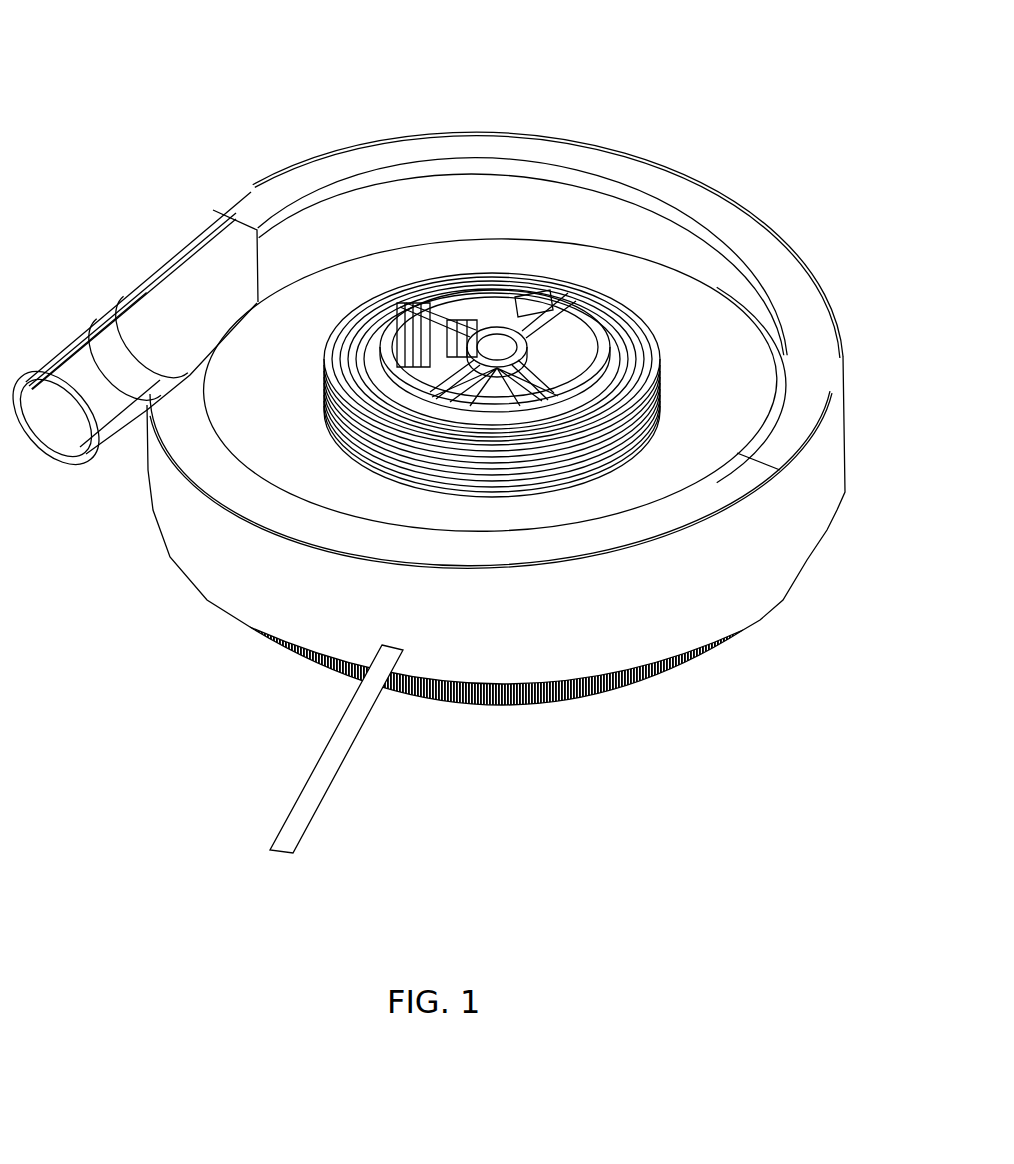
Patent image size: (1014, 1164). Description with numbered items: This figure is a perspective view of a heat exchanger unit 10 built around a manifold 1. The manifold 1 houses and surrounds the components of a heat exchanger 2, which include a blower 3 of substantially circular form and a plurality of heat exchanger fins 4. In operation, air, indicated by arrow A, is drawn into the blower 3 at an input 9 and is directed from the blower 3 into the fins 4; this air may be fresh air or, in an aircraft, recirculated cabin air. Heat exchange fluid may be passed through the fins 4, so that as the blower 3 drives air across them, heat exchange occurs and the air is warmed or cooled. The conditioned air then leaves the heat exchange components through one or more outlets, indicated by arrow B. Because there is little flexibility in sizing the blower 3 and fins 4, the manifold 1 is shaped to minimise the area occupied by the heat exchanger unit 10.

The heat exchanger unit 10 is at (165, 60).
The manifold 1 is at (560, 140).
The heat exchanger 2 is at (640, 385).
The blower 3 is at (565, 355).
The input 9 is at (533, 343).
The heat exchanger fins 4 is at (618, 686).